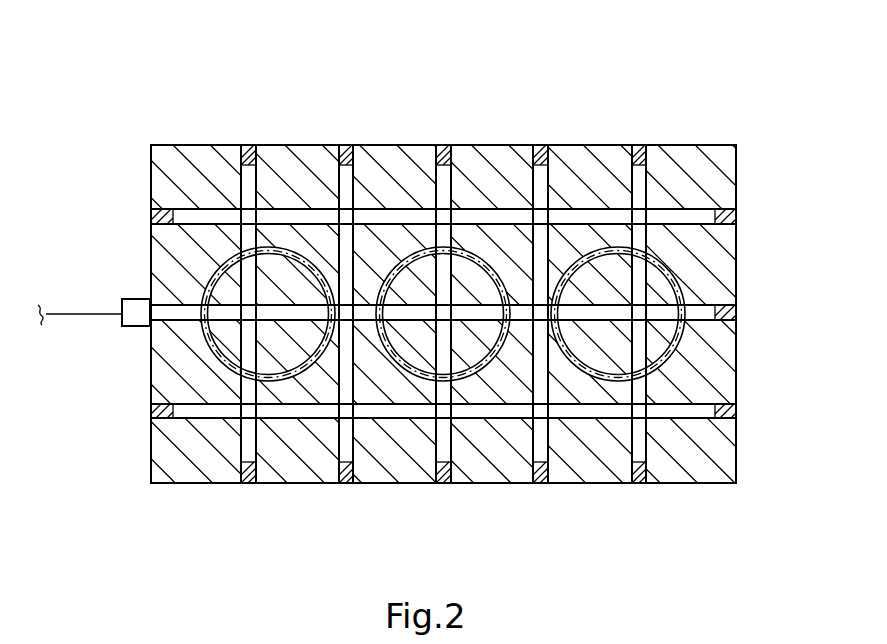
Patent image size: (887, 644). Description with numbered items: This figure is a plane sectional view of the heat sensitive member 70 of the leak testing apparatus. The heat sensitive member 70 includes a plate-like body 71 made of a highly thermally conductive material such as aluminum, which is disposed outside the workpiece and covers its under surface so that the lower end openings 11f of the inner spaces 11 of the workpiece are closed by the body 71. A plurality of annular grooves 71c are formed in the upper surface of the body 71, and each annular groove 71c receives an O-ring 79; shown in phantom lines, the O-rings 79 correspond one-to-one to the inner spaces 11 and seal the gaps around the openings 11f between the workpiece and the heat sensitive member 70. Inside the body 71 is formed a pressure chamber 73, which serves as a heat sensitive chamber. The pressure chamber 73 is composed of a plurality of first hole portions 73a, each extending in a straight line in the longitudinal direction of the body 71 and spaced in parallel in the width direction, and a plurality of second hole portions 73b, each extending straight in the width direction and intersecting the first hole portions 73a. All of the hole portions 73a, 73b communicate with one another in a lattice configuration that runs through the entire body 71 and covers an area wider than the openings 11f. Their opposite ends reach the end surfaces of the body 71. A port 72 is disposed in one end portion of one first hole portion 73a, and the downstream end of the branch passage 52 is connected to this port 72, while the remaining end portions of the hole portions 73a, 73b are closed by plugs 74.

The heat sensitive member 70 is at (150, 143).
The body 71 is at (302, 145).
The annular grooves 71c is at (208, 345).
The port 72 is at (120, 302).
The pressure chamber 73 is at (405, 326).
The first hole portions 73a is at (476, 215).
The second hole portions 73b is at (244, 194).
The plugs 74 is at (640, 145).
The O-rings 79 is at (207, 280).
The inner spaces 11 is at (451, 319).
The lower end openings 11f is at (285, 354).
The branch passage 52 is at (62, 312).